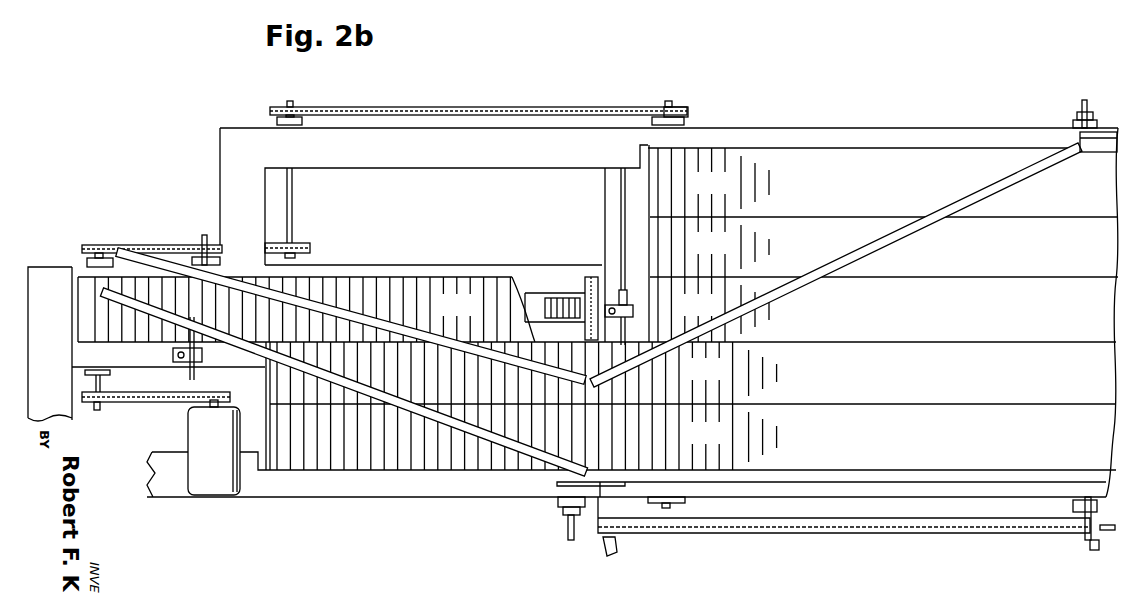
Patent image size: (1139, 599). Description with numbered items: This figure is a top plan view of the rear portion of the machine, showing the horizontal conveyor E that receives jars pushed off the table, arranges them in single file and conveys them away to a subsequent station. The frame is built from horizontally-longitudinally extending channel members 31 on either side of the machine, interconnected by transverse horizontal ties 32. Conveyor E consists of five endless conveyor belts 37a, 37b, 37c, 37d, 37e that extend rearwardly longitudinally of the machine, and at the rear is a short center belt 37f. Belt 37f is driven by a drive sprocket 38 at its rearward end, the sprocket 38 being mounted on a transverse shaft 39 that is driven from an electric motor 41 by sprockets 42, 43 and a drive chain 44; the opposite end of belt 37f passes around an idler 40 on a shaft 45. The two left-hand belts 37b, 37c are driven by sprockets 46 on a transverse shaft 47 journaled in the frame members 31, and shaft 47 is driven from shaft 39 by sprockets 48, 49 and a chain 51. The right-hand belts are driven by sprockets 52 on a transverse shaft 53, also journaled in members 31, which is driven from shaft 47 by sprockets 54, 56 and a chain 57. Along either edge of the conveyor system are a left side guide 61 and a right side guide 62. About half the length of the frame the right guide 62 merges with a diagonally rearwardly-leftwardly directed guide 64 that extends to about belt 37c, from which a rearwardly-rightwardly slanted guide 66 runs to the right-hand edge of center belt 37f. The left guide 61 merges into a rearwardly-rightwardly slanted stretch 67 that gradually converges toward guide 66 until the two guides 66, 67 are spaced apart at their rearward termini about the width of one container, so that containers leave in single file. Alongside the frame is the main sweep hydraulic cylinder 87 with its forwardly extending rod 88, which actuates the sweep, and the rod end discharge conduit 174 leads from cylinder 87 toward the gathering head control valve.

The channel members 31 is at (812, 128).
The transverse horizontal ties 32 is at (258, 213).
The endless conveyor belt 37a is at (710, 316).
The endless conveyor belt 37b is at (718, 380).
The endless conveyor belt 37c is at (720, 444).
The endless conveyor belt 37d is at (730, 194).
The endless conveyor belt 37e is at (730, 254).
The short belt 37f is at (470, 316).
The drive sprocket 38 is at (85, 308).
The transverse shaft 39 is at (100, 383).
The idler 40 is at (549, 299).
The electric motor 41 is at (228, 458).
The sprocket 42 is at (206, 386).
The sprocket 43 is at (100, 410).
The drive chain 44 is at (160, 402).
The shaft 45 is at (570, 299).
The sprockets 46 is at (272, 380).
The transverse shaft 47 is at (292, 213).
The sprocket 48 is at (96, 252).
The sprocket 49 is at (303, 249).
The chain 51 is at (172, 246).
The sprockets 52 is at (648, 232).
The transverse shaft 53 is at (672, 101).
The sprocket 54 is at (297, 106).
The sprocket 56 is at (689, 107).
The chain 57 is at (421, 107).
The left side guide 61 is at (946, 481).
The right side guide 62 is at (1105, 153).
The guide 64 is at (925, 225).
The guide 66 is at (497, 356).
The slanted stretch 67 is at (440, 415).
The main sweep hydraulic cylinder 87 is at (834, 531).
The rod 88 is at (1101, 531).
The rod end discharge conduit 174 is at (1092, 551).
The horizontal conveyor E is at (754, 124).